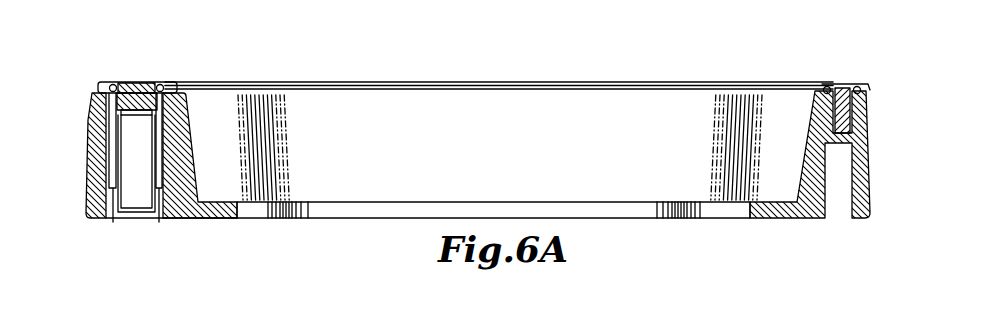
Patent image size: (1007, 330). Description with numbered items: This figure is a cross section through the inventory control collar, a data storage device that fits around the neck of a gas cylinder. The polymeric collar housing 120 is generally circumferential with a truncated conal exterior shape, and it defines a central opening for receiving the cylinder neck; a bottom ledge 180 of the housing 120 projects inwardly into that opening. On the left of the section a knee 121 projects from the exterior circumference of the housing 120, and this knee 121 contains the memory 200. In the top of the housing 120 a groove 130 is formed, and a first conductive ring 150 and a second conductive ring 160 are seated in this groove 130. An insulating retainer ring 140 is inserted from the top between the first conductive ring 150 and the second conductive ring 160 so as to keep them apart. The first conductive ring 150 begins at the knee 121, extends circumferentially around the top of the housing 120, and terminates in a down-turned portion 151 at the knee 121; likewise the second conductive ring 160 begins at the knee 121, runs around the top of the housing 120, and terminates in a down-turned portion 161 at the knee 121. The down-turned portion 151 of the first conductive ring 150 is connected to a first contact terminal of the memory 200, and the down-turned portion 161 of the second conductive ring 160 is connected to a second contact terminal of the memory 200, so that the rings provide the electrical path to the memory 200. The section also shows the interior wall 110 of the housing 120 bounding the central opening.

The housing body 110 is at (233, 161).
The collar housing 120 is at (870, 183).
The knee 121 is at (92, 167).
The groove 130 is at (157, 86).
The insulating retainer ring 140 is at (135, 84).
The first conductive ring 150 is at (167, 90).
The down-turned portion 151 is at (114, 222).
The second conductive ring 160 is at (113, 85).
The down-turned portion 161 is at (160, 222).
The bottom ledge 180 is at (227, 220).
The memory 200 is at (127, 142).